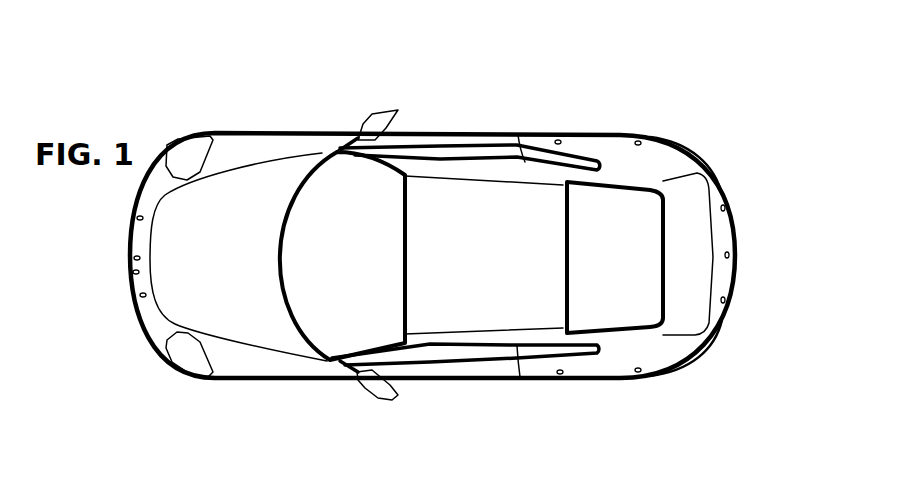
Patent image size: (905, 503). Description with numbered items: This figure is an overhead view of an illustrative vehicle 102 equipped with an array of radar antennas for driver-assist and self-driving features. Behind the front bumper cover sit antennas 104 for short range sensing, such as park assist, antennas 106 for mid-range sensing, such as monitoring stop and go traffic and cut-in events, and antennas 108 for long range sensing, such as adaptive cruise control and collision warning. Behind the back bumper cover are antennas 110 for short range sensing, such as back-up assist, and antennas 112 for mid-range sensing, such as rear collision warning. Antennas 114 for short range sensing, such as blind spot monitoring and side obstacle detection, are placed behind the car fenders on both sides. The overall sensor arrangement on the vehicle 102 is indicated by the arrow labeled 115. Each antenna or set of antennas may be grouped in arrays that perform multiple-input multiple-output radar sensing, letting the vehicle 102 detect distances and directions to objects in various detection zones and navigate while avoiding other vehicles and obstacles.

The vehicle 102 is at (307, 380).
The antennas for short range sensing 104 is at (141, 292).
The antennas for mid-range sensing 106 is at (130, 273).
The antennas for long range sensing 108 is at (136, 257).
The antennas for short range sensing 110 is at (722, 298).
The antennas for mid-range sensing 112 is at (733, 258).
The antennas for short range sensing 114 is at (563, 142).
The vehicle sensor system 115 is at (730, 71).